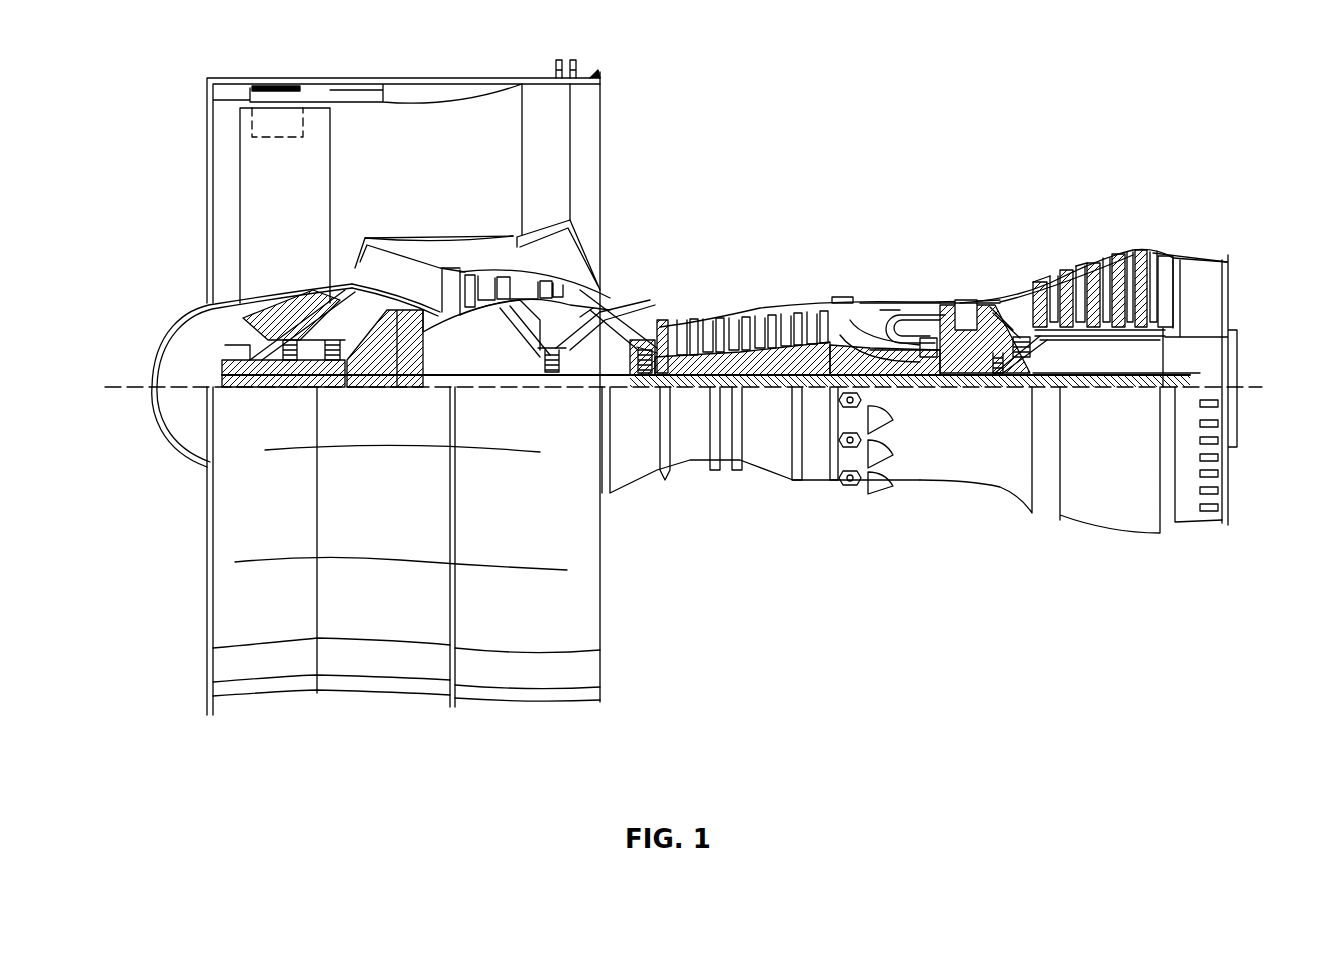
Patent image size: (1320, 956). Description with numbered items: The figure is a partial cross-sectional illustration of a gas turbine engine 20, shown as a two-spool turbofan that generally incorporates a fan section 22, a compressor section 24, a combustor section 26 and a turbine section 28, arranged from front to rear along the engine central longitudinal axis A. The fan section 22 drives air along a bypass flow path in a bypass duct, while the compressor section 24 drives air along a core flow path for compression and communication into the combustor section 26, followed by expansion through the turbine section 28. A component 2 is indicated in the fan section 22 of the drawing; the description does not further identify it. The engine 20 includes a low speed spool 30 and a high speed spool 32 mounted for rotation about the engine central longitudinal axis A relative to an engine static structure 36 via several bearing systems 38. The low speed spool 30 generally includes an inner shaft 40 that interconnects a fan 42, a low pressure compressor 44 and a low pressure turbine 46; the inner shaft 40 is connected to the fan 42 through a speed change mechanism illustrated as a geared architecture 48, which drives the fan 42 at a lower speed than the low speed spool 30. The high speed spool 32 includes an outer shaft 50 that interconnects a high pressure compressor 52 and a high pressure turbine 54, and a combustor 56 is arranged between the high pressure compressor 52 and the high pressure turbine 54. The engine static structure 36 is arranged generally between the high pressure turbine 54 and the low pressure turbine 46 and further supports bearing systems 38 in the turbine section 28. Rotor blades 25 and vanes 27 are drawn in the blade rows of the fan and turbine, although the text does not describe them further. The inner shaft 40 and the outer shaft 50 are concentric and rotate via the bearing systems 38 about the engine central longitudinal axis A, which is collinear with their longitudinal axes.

The component 2 is at (282, 72).
The gas turbine engine 20 is at (1020, 98).
The fan section 22 is at (318, 66).
The compressor section 24 is at (730, 208).
The rotor blades 25 is at (470, 274).
The combustor section 26 is at (933, 208).
The vanes 27 is at (500, 275).
The turbine section 28 is at (1035, 208).
The low speed spool 30 is at (778, 402).
The high speed spool 32 is at (832, 340).
The engine static structure 36 is at (810, 498).
The bearing systems 38 is at (292, 365).
The inner shaft 40 is at (618, 393).
The fan 42 is at (292, 209).
The low pressure compressor 44 is at (572, 262).
The low pressure turbine 46 is at (1106, 250).
The geared architecture 48 is at (402, 365).
The outer shaft 50 is at (918, 378).
The high pressure compressor 52 is at (706, 323).
The high pressure turbine 54 is at (962, 303).
The combustor 56 is at (885, 320).
The engine central longitudinal axis A is at (1255, 387).